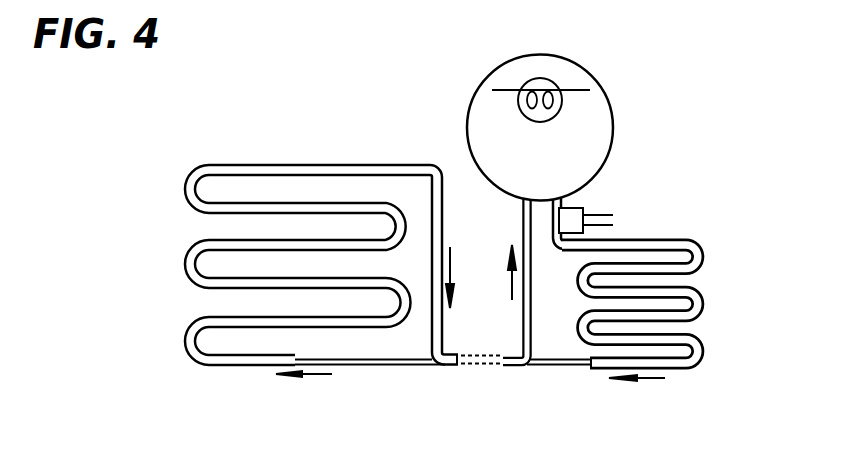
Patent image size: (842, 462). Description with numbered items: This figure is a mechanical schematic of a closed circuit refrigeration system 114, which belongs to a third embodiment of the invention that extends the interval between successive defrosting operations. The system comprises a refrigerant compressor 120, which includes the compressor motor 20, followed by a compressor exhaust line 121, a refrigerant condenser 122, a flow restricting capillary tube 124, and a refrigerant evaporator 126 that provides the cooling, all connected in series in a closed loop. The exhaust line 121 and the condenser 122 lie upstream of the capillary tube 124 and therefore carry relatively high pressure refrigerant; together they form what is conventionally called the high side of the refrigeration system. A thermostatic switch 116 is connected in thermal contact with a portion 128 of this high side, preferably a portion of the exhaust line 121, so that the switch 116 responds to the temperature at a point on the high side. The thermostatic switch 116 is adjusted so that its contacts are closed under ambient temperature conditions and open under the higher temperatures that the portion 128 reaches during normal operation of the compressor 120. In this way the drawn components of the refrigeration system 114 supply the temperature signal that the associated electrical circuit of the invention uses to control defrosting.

The closed circuit refrigeration system 114 is at (457, 216).
The thermostatic switch 116 is at (586, 206).
The refrigerant compressor 120 is at (538, 56).
The compressor motor 20 is at (542, 122).
The compressor exhaust line 121 is at (553, 223).
The refrigerant condenser 122 is at (705, 258).
The flow restricting capillary tube 124 is at (560, 370).
The refrigerant evaporator 126 is at (185, 267).
The portion of the refrigeration system high side 128 is at (576, 206).